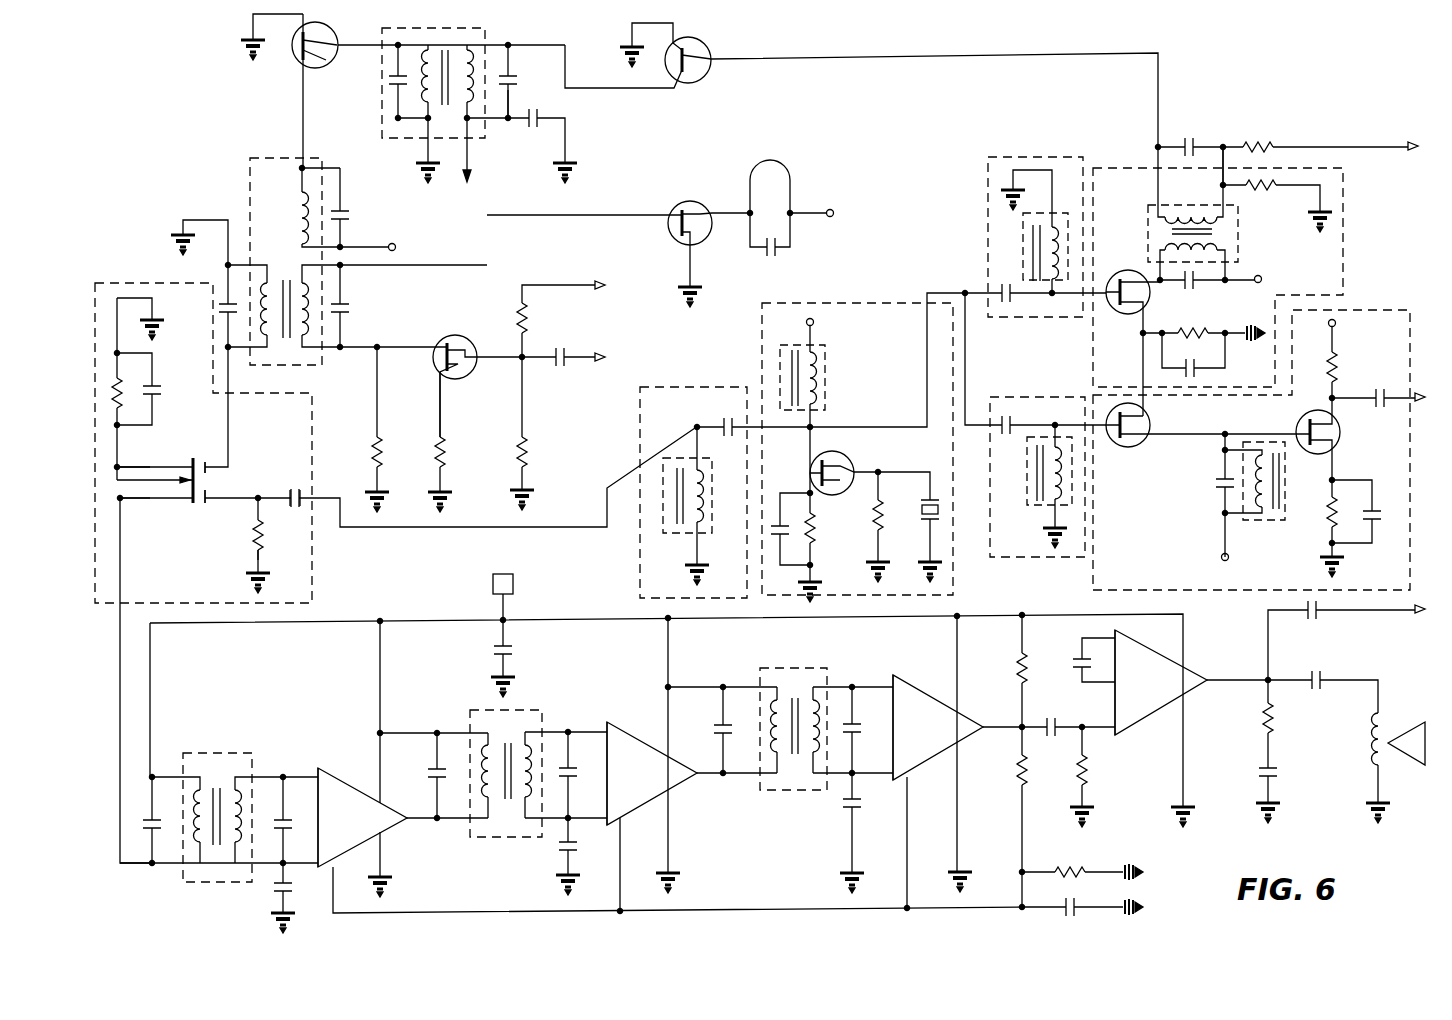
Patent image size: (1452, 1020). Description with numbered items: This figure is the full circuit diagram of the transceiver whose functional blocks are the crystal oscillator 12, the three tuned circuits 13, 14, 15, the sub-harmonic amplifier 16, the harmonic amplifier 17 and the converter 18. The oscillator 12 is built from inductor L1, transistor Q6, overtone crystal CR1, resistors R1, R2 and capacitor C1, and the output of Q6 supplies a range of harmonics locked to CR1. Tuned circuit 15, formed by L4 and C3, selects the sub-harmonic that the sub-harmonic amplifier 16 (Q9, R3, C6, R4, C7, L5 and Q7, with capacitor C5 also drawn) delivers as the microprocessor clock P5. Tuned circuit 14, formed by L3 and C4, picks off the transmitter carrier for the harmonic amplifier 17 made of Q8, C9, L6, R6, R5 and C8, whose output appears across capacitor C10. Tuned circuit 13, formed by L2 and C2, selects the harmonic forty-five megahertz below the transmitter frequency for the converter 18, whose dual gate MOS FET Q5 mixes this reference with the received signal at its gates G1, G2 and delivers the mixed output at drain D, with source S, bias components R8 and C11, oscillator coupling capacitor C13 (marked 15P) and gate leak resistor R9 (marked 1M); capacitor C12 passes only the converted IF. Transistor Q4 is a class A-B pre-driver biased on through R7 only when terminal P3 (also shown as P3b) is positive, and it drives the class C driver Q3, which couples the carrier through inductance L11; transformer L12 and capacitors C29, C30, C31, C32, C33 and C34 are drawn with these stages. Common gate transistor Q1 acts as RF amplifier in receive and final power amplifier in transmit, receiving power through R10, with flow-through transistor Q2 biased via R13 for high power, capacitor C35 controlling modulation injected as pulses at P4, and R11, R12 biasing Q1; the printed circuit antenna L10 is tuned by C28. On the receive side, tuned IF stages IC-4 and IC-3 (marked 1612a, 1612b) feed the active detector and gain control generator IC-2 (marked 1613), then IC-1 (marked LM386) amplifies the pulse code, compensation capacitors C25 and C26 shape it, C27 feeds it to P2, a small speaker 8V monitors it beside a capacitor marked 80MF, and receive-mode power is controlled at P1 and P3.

The common gate amplifier transistor Q1 is at (683, 203).
The flow-through transistor Q2 is at (444, 340).
The class C driver transistor Q3 is at (300, 84).
The pre-driver transistor Q4 is at (709, 47).
The dual gate MOS FET Q5 is at (192, 457).
The oscillator transistor Q6 is at (862, 455).
The sub-harmonic amplifier transistor Q7 is at (1129, 447).
The harmonic amplifier transistor Q8 is at (1124, 269).
The sub-harmonic amplifier transistor Q9 is at (1343, 430).
The oscillator inductor L1 is at (829, 380).
The tuned circuit inductor L2 is at (713, 500).
The tuned circuit inductor L3 is at (1026, 257).
The tuned circuit inductor L4 is at (1026, 480).
The sub-harmonic amplifier inductor L5 is at (1245, 520).
The harmonic amplifier inductor L6 is at (1147, 218).
The printed circuit antenna L10 is at (794, 180).
The inductance L11 is at (249, 185).
The transformer L12 is at (441, 27).
The oscillator capacitor C1 is at (780, 520).
The tuned circuit capacitor C2 is at (725, 418).
The tuned circuit capacitor C3 is at (1007, 416).
The tuned circuit capacitor C4 is at (1002, 285).
The capacitor C5 is at (1222, 478).
The sub-harmonic amplifier capacitor C6 is at (1376, 507).
The sub-harmonic amplifier capacitor C7 is at (1378, 392).
The harmonic amplifier capacitor C8 is at (1205, 366).
The harmonic amplifier capacitor C9 is at (1194, 287).
The output capacitor C10 is at (1187, 138).
The bias capacitor C11 is at (157, 386).
The IF capacitor C12 is at (148, 815).
The oscillator coupling capacitor C13 is at (291, 508).
The compensation capacitor C25 is at (1280, 778).
The compensation capacitor C26 is at (1078, 657).
The coupling capacitor C27 is at (1326, 617).
The antenna tuning capacitor C28 is at (777, 252).
The capacitor C29 is at (348, 303).
The capacitor C30 is at (345, 210).
The capacitor C31 is at (218, 310).
The capacitor C32 is at (532, 125).
The capacitor C33 is at (512, 76).
The capacitor C34 is at (395, 82).
The modulation control capacitor C35 is at (562, 347).
The oscillator resistor R1 is at (872, 512).
The oscillator resistor R2 is at (815, 535).
The sub-harmonic amplifier resistor R3 is at (1328, 505).
The sub-harmonic amplifier resistor R4 is at (1340, 360).
The harmonic amplifier resistor R5 is at (1190, 328).
The harmonic amplifier resistor R6 is at (1258, 190).
The bias resistor R7 is at (1262, 142).
The bias resistor R8 is at (120, 405).
The gate leak resistor R9 is at (253, 540).
The power resistor R10 is at (372, 440).
The bias resistor R11 is at (437, 440).
The bias resistor R12 is at (518, 440).
The bias resistor R13 is at (516, 312).
The overtone crystal CR1 is at (930, 492).
The crystal oscillator 12 is at (851, 302).
The tuned circuit 13 is at (639, 437).
The tuned circuit 14 is at (986, 197).
The tuned circuit 15 is at (1040, 392).
The sub-harmonic amplifier 16 is at (1367, 308).
The harmonic amplifier 17 is at (1346, 232).
The converter 18 is at (316, 567).
The microprocessor control terminal P1 is at (517, 634).
The microprocessor output terminal P2 is at (1433, 608).
The transmit mode control terminal P3 is at (618, 283).
The transmit mode control terminal P3b is at (1427, 145).
The modulation input terminal P4 is at (619, 356).
The microprocessor clock signal terminal P5 is at (1433, 398).
The gate 1 of Q5 G1 is at (222, 455).
The gate 2 of Q5 G2 is at (221, 506).
The source of Q5 S is at (125, 456).
The drain D is at (125, 510).
The 15 pF capacitor value 15P is at (302, 485).
The 1 megohm value of R9 1M is at (231, 566).
The integrated circuit amplifier IC-1 is at (1240, 637).
The active detector IC-2 is at (1010, 652).
The tuned IF amplifier stage IC-3 is at (716, 721).
The tuned IF amplifier stage IC-4 is at (428, 767).
The LM386 audio amplifier LM386 is at (1138, 682).
The type 1612 amplifier (IC-4) 1612a is at (347, 817).
The type 1612 amplifier (IC-3) 1612b is at (636, 773).
The type 1613 amplifier (IC-2) 1613 is at (924, 727).
The 80 microfarad output capacitor 80MF is at (1339, 683).
The small speaker 8V is at (1386, 768).